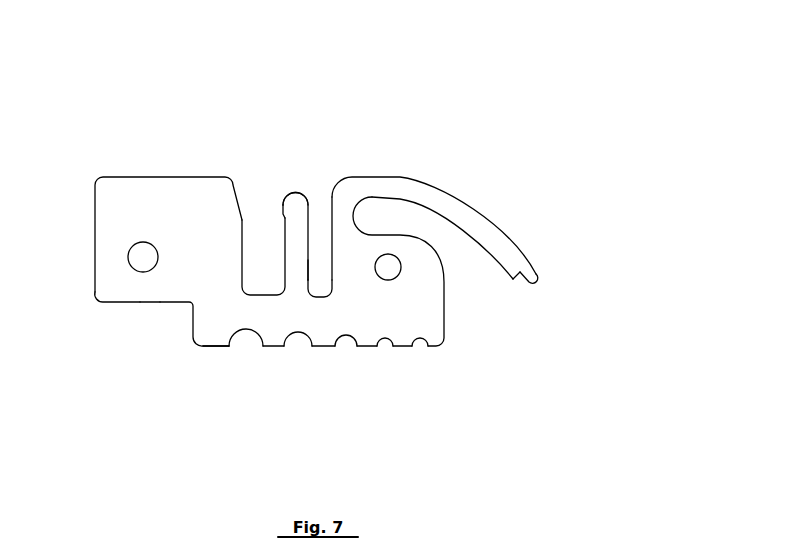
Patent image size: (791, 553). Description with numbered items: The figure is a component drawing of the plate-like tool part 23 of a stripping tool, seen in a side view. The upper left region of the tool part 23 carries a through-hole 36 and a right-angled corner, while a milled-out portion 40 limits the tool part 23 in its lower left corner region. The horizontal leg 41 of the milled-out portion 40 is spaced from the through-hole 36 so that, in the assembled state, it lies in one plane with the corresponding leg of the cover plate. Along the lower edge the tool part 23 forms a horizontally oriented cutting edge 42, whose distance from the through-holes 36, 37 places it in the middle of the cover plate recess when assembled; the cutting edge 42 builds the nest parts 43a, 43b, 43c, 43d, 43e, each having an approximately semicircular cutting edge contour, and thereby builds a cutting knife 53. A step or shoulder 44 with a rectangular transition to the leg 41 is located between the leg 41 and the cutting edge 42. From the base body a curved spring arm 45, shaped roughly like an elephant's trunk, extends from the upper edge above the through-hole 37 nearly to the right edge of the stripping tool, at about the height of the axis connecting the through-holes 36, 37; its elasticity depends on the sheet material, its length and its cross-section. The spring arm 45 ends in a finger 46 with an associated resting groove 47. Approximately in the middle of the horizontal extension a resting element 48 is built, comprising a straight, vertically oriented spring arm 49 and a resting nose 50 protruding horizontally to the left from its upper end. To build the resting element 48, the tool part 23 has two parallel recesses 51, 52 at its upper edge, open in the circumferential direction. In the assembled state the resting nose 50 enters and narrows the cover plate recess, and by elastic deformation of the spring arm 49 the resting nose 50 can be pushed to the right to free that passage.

The tool part 23 is at (311, 109).
The cutting knife 53 is at (310, 97).
The through-hole 36 is at (145, 262).
The through-hole 37 is at (388, 263).
The milled-out portion 40 is at (150, 314).
The horizontal leg 41 is at (117, 303).
The cutting edge 42 is at (274, 360).
The nest part 43a is at (246, 330).
The nest part 43b is at (298, 333).
The nest part 43c is at (346, 336).
The nest part 43d is at (384, 339).
The nest part 43e is at (420, 340).
The shoulder 44 is at (191, 338).
The spring arm 45 is at (448, 208).
The finger 46 is at (537, 272).
The resting groove 47 is at (520, 274).
The resting element 48 is at (291, 162).
The spring arm 49 is at (300, 248).
The resting nose 50 is at (282, 213).
The recess 51 is at (253, 271).
The recess 52 is at (320, 263).